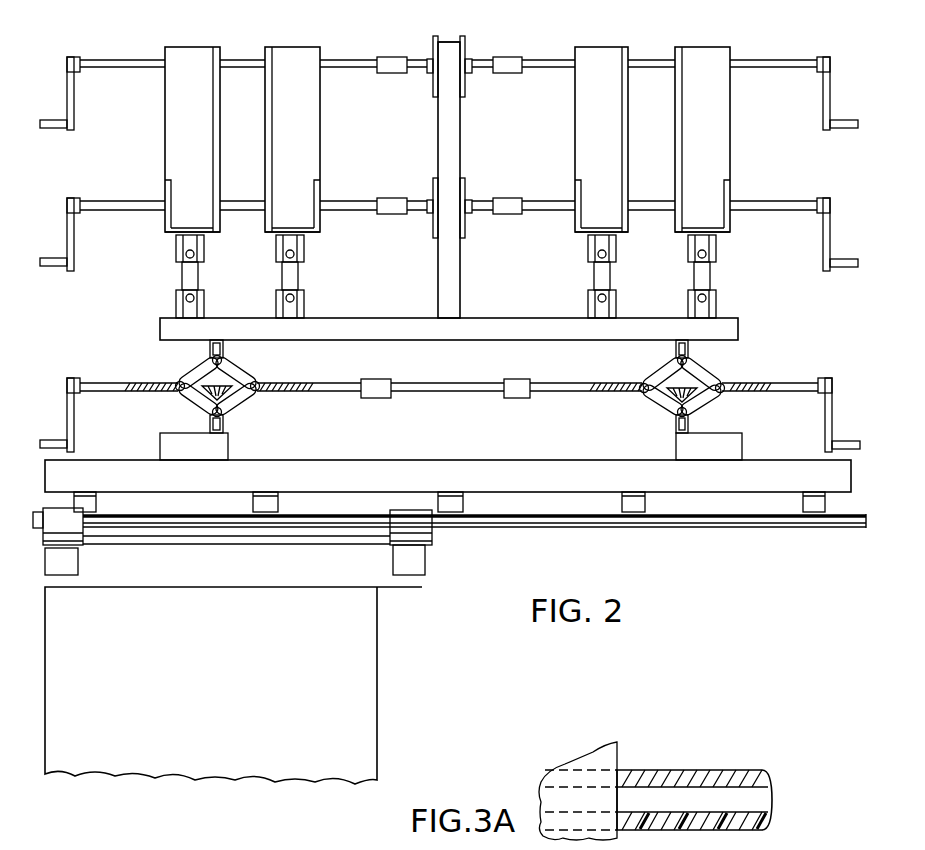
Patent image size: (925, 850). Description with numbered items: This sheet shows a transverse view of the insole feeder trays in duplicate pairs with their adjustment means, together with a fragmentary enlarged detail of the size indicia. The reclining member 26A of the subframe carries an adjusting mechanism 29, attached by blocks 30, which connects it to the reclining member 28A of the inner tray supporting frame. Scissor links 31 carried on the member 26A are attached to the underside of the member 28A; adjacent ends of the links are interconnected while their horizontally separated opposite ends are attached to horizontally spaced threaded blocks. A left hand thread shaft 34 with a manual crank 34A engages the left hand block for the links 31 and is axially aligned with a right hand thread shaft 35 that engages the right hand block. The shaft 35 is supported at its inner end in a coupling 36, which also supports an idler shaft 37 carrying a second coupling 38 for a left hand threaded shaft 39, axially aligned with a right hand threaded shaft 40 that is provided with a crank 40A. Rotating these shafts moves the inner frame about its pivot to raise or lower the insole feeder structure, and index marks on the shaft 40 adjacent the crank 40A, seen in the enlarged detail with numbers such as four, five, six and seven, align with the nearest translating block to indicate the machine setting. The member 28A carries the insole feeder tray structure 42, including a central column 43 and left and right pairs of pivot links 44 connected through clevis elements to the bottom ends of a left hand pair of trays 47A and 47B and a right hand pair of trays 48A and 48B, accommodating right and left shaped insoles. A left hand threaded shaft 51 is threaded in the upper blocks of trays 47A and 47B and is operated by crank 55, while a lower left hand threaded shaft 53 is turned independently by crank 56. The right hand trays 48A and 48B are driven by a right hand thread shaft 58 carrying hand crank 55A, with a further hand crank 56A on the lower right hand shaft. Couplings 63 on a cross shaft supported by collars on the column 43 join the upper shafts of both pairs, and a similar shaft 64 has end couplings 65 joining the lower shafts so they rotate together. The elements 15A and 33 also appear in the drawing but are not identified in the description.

In FIG. 2, the mounting plate 15A is at (262, 668).
In FIG. 2, the reclining member of subframe 26A is at (360, 460).
In FIG. 2, the reclining member of inner tray supporting frame 28A is at (474, 328).
In FIG. 2, the adjusting mechanism 29 is at (451, 398).
In FIG. 2, the blocks 30 is at (228, 444).
In FIG. 2, the scissor links 31 is at (239, 367).
In FIG. 2, the pivot block 33 is at (210, 348).
In FIG. 2, the left hand thread shaft 34 is at (97, 397).
In FIG. 2, the manual crank 34A is at (68, 416).
In FIG. 2, the right hand thread shaft 35 is at (306, 380).
In FIG. 2, the coupling 36 is at (376, 379).
In FIG. 2, the idler shaft 37 is at (450, 388).
In FIG. 2, the second coupling 38 is at (508, 379).
In FIG. 2, the left hand threaded shaft 39 is at (586, 394).
In FIG. 2, the right hand threaded shaft 40 is at (803, 401).
In FIG. 3A, the right hand threaded shaft 40 is at (660, 774).
In FIG. 2, the crank 40A is at (832, 434).
In FIG. 2, the insole feeder tray structure 42 is at (463, 40).
In FIG. 2, the central column 43 is at (458, 134).
In FIG. 2, the pivot links 44 is at (270, 271).
In FIG. 2, the insole support tray 47A is at (598, 62).
In FIG. 2, the insole support tray 47B is at (707, 64).
In FIG. 2, the insole support tray 48A is at (302, 62).
In FIG. 2, the insole support tray 48B is at (195, 62).
In FIG. 2, the left hand threaded shaft 51 is at (764, 72).
In FIG. 2, the left hand threaded shaft 53 is at (769, 212).
In FIG. 2, the crank 55 is at (830, 103).
In FIG. 2, the hand crank 55A is at (64, 88).
In FIG. 2, the crank 56 is at (830, 240).
In FIG. 2, the hand crank 56A is at (66, 223).
In FIG. 2, the right hand thread shaft 58 is at (114, 70).
In FIG. 2, the couplings 63 is at (265, 132).
In FIG. 2, the shaft 64 is at (172, 234).
In FIG. 2, the end couplings 65 is at (172, 183).